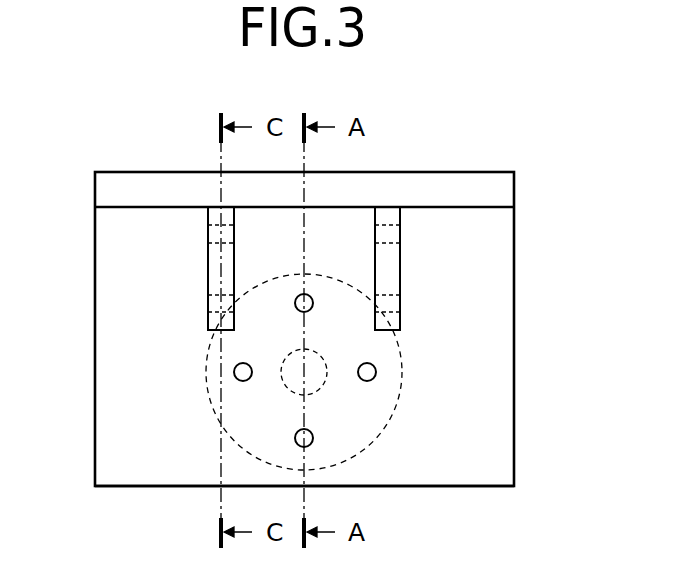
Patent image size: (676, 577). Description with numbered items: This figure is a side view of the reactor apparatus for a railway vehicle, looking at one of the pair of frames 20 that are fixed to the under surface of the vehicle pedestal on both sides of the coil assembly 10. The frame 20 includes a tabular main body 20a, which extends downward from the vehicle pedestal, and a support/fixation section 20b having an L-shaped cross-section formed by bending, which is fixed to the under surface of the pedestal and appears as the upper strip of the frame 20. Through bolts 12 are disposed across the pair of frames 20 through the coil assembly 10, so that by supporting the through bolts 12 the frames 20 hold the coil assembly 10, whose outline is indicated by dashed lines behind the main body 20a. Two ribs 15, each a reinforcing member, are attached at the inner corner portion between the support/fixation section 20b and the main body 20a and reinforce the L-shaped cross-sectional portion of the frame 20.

The coil assembly 10 is at (205, 372).
The through bolts 12 is at (376, 372).
The rib 15 is at (208, 271).
The frame 20 is at (497, 331).
The main body 20a is at (497, 438).
The support/fixation section 20b is at (497, 190).